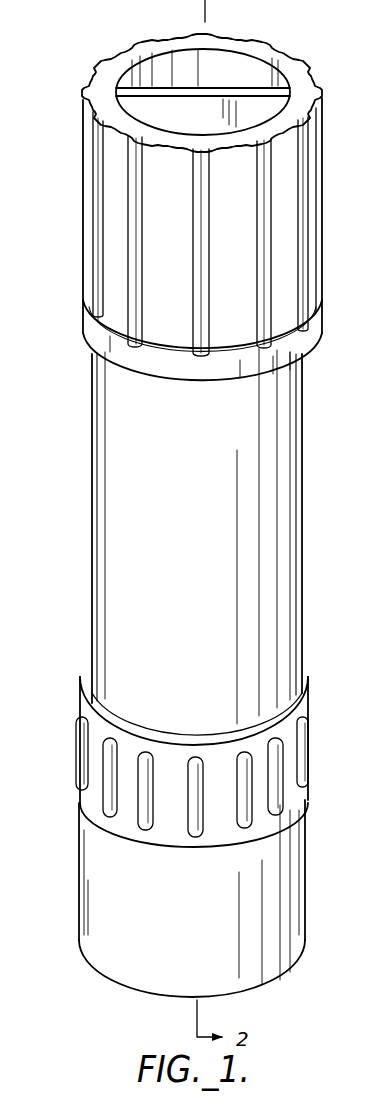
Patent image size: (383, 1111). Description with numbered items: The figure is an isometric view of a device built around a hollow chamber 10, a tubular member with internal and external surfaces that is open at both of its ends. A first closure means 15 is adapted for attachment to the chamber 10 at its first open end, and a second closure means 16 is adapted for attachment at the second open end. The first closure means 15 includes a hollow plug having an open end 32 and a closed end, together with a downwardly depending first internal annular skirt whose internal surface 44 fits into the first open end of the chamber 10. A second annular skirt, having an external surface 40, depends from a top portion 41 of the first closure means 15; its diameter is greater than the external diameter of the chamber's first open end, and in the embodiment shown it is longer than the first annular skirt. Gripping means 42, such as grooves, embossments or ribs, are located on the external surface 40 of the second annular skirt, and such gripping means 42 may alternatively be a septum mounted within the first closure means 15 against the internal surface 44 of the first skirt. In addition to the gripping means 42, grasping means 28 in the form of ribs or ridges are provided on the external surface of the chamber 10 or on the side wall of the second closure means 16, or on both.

The hollow chamber 10 is at (303, 552).
The first closure means 15 is at (232, 193).
The second closure means 16 is at (308, 851).
The grasping means 28 is at (279, 793).
The open end 32 is at (249, 72).
The external surface 40 is at (233, 239).
The top portion 41 is at (296, 102).
The gripping means 42 is at (265, 208).
The internal surface 44 is at (264, 53).